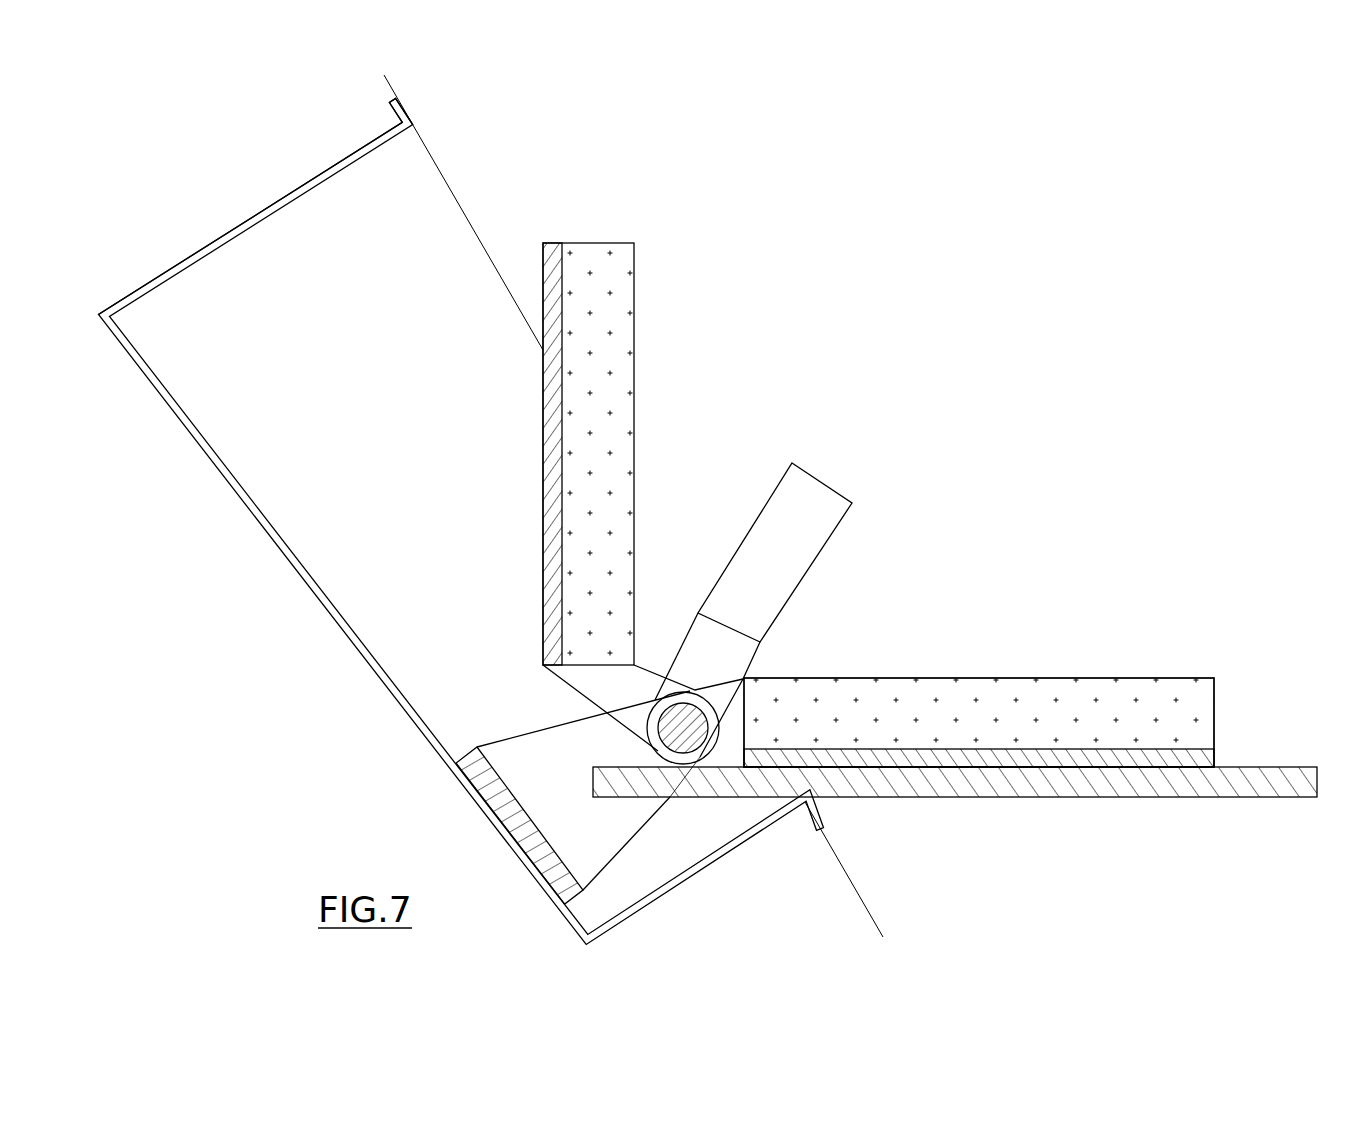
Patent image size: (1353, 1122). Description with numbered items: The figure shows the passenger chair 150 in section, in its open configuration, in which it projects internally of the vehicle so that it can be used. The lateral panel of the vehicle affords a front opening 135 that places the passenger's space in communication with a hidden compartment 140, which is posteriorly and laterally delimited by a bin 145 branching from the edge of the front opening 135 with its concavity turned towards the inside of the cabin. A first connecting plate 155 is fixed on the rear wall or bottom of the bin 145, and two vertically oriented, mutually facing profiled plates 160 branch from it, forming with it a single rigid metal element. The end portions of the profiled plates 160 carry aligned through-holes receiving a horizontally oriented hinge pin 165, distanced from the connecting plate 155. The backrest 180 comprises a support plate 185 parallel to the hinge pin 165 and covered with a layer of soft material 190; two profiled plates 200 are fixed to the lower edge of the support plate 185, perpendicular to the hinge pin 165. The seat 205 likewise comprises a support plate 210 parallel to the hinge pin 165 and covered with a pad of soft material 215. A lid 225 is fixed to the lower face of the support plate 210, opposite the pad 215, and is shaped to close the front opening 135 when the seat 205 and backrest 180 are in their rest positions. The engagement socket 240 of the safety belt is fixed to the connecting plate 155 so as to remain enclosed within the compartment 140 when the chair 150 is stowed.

The front opening 135 is at (386, 110).
The hidden compartment 140 is at (205, 340).
The bin 145 is at (277, 195).
The chair 150 is at (1037, 465).
The first connecting plate 155 is at (483, 812).
The profiled plates 160 is at (572, 822).
The hinge pin 165 is at (743, 679).
The backrest 180 is at (652, 297).
The support plate 185 is at (550, 440).
The layer of soft material 190 is at (603, 388).
The profiled plates 200 is at (630, 692).
The seat 205 is at (1145, 668).
The support plate 210 is at (1052, 745).
The pad of soft material 215 is at (945, 712).
The lid 225 is at (1120, 787).
The engagement socket 240 is at (818, 503).